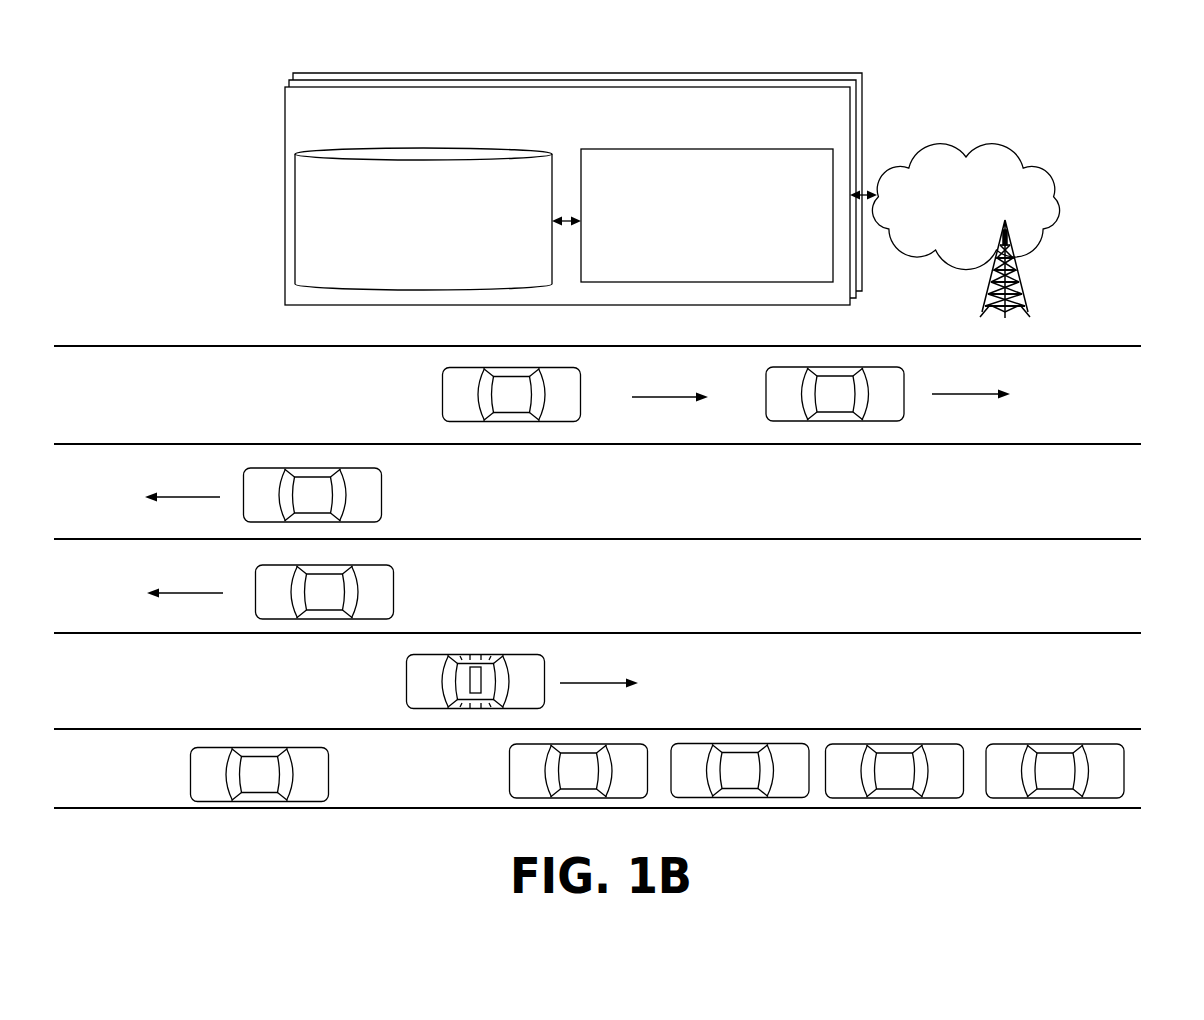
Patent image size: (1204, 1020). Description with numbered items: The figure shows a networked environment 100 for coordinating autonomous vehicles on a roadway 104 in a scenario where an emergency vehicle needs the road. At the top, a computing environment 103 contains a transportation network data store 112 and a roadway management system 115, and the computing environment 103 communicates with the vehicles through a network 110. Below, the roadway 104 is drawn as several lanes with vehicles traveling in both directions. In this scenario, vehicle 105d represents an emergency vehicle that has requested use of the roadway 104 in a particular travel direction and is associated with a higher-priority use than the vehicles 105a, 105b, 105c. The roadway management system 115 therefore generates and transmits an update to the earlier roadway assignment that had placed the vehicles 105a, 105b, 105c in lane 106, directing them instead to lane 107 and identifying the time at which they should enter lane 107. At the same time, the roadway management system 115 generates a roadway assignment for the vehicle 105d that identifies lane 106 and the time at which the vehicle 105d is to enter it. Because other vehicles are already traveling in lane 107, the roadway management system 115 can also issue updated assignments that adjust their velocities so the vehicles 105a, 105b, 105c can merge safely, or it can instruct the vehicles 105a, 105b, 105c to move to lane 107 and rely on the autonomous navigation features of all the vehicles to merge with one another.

The networked environment 100 is at (280, 63).
The computing environment 103 is at (412, 138).
The transportation network data store 112 is at (407, 255).
The roadway management system 115 is at (691, 250).
The network 110 is at (949, 227).
The roadway 104 is at (1088, 347).
The vehicle 105a is at (275, 747).
The vehicle 105b is at (738, 745).
The vehicle 105c is at (1055, 745).
The vehicle 105d is at (545, 676).
The lane 106 is at (1140, 666).
The lane 107 is at (1145, 765).